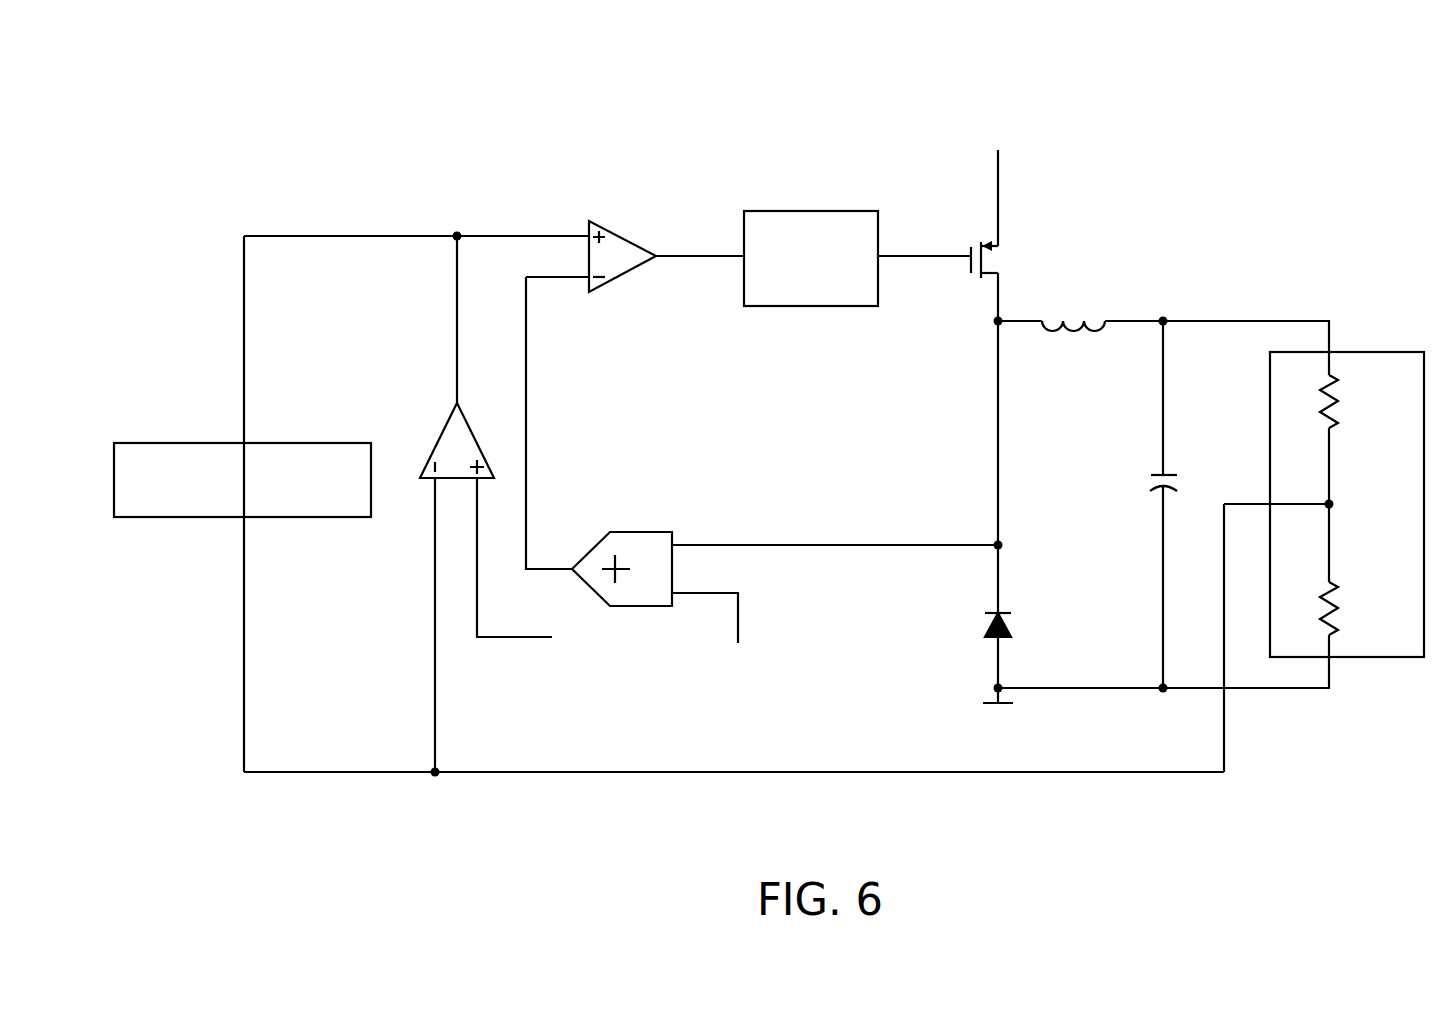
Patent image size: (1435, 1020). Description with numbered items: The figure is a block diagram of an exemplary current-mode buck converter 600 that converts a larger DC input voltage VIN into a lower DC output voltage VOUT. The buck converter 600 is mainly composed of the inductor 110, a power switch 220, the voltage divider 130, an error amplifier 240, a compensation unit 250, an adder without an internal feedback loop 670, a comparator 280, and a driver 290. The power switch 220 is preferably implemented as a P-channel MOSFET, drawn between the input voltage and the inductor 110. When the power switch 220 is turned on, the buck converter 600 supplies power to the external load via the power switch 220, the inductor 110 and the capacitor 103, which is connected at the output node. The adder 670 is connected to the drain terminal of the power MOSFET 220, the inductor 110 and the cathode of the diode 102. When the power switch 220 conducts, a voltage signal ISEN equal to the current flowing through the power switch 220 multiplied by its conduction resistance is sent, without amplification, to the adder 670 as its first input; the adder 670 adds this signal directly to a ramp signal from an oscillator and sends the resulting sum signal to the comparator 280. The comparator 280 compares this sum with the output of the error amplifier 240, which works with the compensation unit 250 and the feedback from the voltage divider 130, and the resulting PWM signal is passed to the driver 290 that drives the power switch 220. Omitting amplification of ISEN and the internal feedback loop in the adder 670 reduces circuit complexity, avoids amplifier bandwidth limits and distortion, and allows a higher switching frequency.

The current-mode buck converter 600 is at (238, 126).
The compensation unit 250 is at (166, 443).
The error amplifier 240 is at (462, 412).
The comparator 280 is at (616, 234).
The driver 290 is at (878, 216).
The power switch 220 is at (996, 270).
The inductor 110 is at (1061, 321).
The capacitor 103 is at (1168, 476).
The diode 102 is at (1004, 613).
The voltage divider 130 is at (1370, 352).
The adder without an internal feedback loop 670 is at (644, 532).